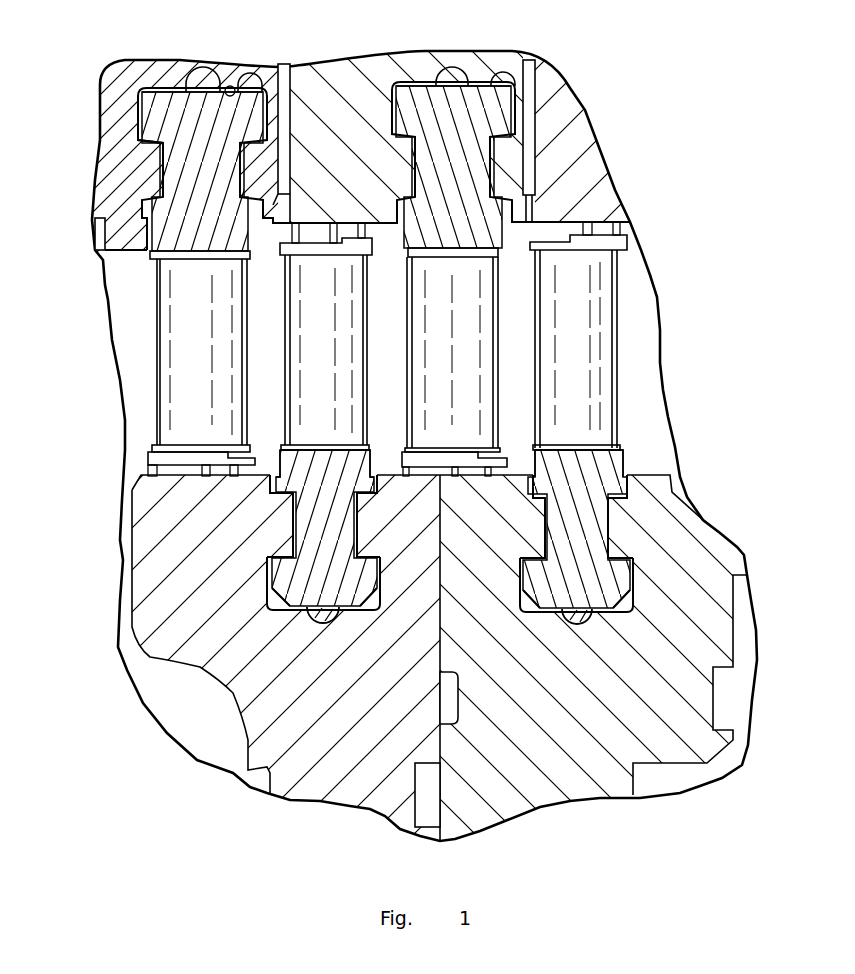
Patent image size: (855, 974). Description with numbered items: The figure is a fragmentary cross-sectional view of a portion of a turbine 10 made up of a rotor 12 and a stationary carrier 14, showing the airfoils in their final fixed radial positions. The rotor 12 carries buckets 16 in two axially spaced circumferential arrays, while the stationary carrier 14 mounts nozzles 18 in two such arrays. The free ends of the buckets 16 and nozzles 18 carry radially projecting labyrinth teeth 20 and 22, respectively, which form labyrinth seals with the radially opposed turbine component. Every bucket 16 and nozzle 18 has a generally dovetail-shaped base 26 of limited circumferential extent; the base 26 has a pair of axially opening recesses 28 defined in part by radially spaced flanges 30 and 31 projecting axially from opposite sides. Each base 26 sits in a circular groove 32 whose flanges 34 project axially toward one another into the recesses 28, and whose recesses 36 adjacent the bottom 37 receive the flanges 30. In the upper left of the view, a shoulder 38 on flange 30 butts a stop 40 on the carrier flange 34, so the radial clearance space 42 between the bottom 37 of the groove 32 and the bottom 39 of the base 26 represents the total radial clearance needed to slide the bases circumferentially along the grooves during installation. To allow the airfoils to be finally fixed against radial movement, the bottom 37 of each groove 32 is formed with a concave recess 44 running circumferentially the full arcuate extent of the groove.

The turbine 10 is at (96, 563).
The rotor 12 is at (177, 630).
The stationary carrier 14 is at (118, 76).
The bucket 16 is at (312, 283).
The nozzle 18 is at (193, 338).
The labyrinth teeth 20 is at (376, 232).
The labyrinth teeth 22 is at (152, 468).
The base 26 is at (197, 172).
The recesses 28 is at (293, 527).
The flange 30 is at (157, 105).
The flange 31 is at (278, 470).
The circular groove 32 is at (262, 88).
The flanges 34 is at (100, 212).
The recesses 36 is at (383, 583).
The bottom 37 is at (230, 86).
The shoulder 38 is at (140, 148).
The bottom 39 is at (207, 85).
The stop 40 is at (142, 123).
The radial clearance space 42 is at (180, 88).
The concave recess 44 is at (309, 622).